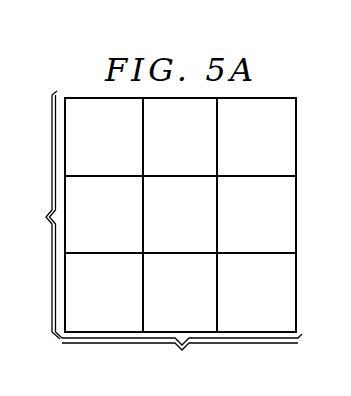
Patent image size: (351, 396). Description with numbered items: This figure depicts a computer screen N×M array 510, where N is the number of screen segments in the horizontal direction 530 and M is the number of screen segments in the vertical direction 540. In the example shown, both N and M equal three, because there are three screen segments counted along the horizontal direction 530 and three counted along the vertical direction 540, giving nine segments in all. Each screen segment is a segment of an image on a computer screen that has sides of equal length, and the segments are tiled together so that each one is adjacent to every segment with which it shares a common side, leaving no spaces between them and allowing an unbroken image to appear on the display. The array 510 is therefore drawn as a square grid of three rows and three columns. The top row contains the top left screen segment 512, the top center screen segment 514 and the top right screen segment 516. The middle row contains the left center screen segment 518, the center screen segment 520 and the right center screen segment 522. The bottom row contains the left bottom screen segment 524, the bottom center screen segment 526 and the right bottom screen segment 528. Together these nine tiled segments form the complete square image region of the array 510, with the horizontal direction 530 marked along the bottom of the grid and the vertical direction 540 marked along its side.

The computer screen N×M array 510 is at (73, 72).
The top left screen segment 512 is at (122, 148).
The top center screen segment 514 is at (198, 148).
The top right screen segment 516 is at (276, 148).
The left center screen segment 518 is at (122, 225).
The center screen segment 520 is at (198, 225).
The right center screen segment 522 is at (276, 225).
The left bottom screen segment 524 is at (122, 305).
The bottom center screen segment 526 is at (198, 305).
The right bottom screen segment 528 is at (276, 305).
The horizontal direction 530 is at (182, 357).
The vertical direction 540 is at (35, 215).